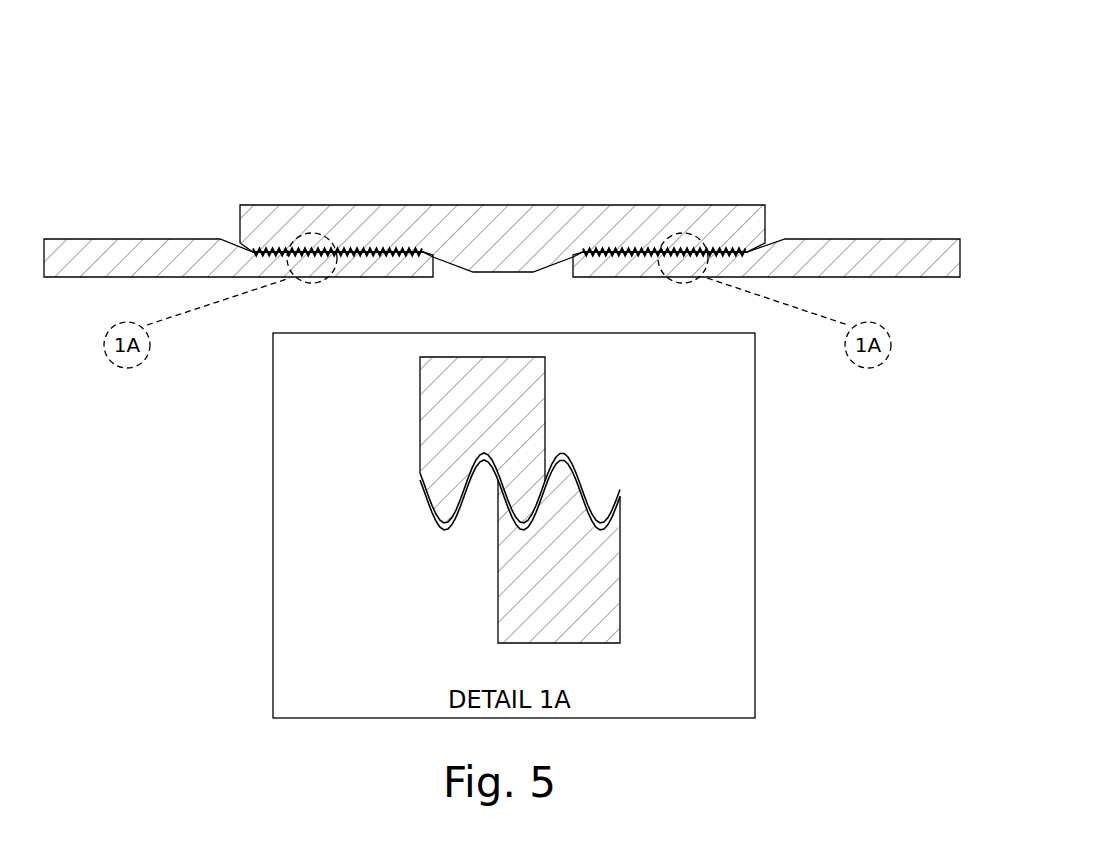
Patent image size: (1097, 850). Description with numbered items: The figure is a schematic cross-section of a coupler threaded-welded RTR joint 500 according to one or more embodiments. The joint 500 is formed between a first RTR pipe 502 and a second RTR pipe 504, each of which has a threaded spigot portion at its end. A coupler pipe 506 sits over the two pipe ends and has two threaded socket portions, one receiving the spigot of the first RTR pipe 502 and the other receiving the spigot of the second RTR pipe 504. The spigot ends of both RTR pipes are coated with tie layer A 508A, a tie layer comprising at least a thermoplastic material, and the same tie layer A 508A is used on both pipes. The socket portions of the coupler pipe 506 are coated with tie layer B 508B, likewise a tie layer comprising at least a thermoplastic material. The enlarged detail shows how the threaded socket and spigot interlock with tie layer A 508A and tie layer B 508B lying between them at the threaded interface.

The coupler threaded-welded RTR joint 500 is at (683, 88).
The first RTR pipe 502 is at (201, 229).
The second RTR pipe 504 is at (793, 228).
The coupler pipe 506 is at (503, 196).
The tie layer A 508A is at (592, 479).
The tie layer B 508B is at (417, 510).